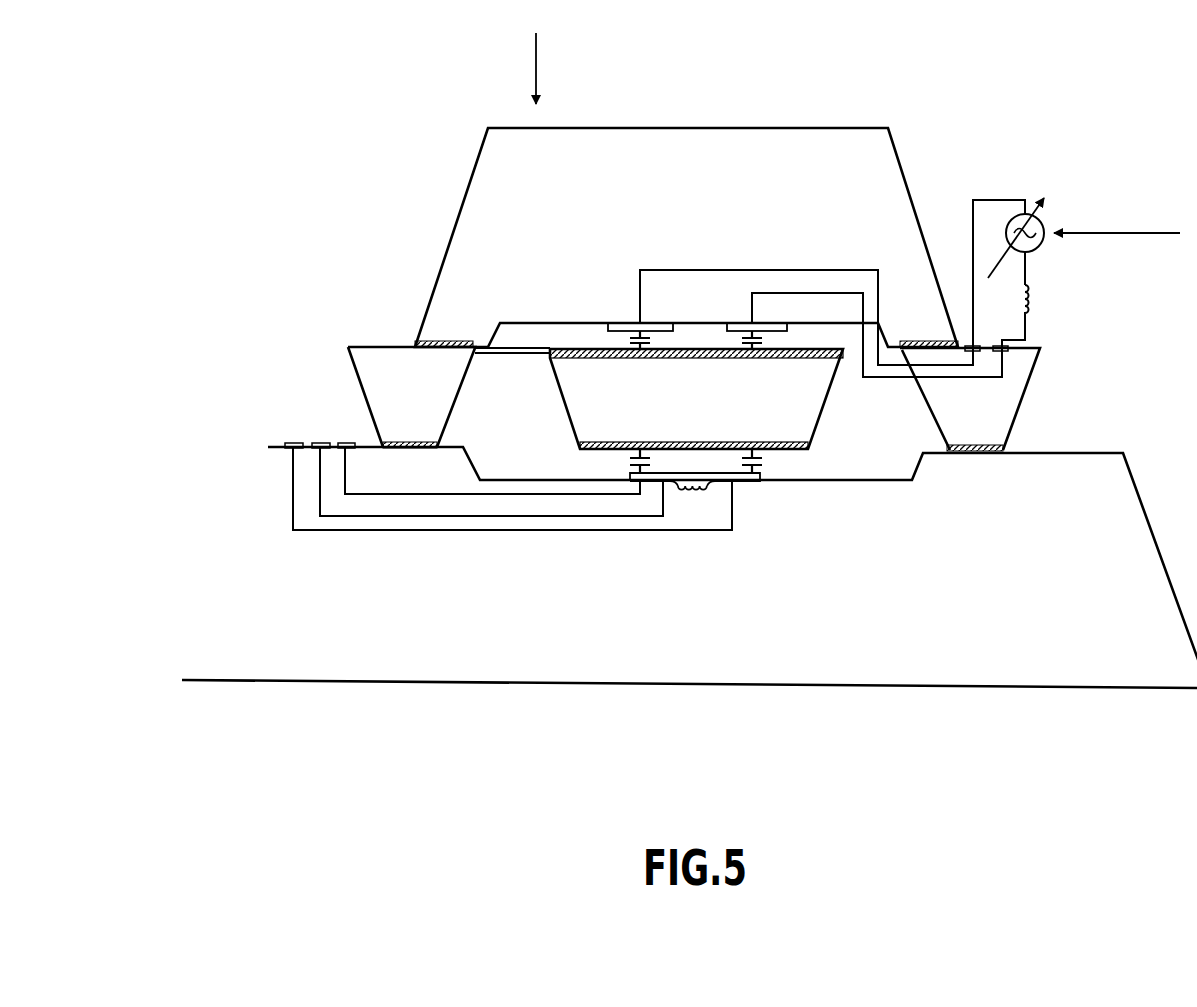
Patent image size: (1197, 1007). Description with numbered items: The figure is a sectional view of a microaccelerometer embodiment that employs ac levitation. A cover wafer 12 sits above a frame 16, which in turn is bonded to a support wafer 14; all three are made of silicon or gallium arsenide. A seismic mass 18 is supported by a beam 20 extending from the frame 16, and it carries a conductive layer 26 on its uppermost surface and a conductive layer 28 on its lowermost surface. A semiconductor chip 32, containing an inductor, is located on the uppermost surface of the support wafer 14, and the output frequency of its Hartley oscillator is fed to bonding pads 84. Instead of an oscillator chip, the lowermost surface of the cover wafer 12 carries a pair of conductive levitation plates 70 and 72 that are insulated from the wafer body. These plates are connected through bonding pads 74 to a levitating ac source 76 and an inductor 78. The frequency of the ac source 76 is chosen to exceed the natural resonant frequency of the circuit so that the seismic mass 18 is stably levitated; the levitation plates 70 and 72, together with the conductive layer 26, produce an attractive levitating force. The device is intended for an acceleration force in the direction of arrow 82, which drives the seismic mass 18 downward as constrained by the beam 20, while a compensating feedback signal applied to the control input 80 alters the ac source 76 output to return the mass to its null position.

The cover wafer 12 is at (710, 201).
The support wafer 14 is at (700, 604).
The frame 16 is at (421, 406).
The seismic mass 18 is at (643, 404).
The beam 20 is at (479, 356).
The conductive layer 26 is at (697, 360).
The conductive layer 28 is at (773, 443).
The semiconductor chip 32 is at (743, 485).
The conductive levitation plate 70 is at (628, 322).
The conductive levitation plate 72 is at (740, 322).
The bonding pads 74 is at (1012, 348).
The levitating ac source 76 is at (1005, 213).
The inductor 78 is at (1032, 288).
The control input 80 is at (1120, 234).
The arrow 82 is at (530, 60).
The bonding pads 84 is at (330, 424).